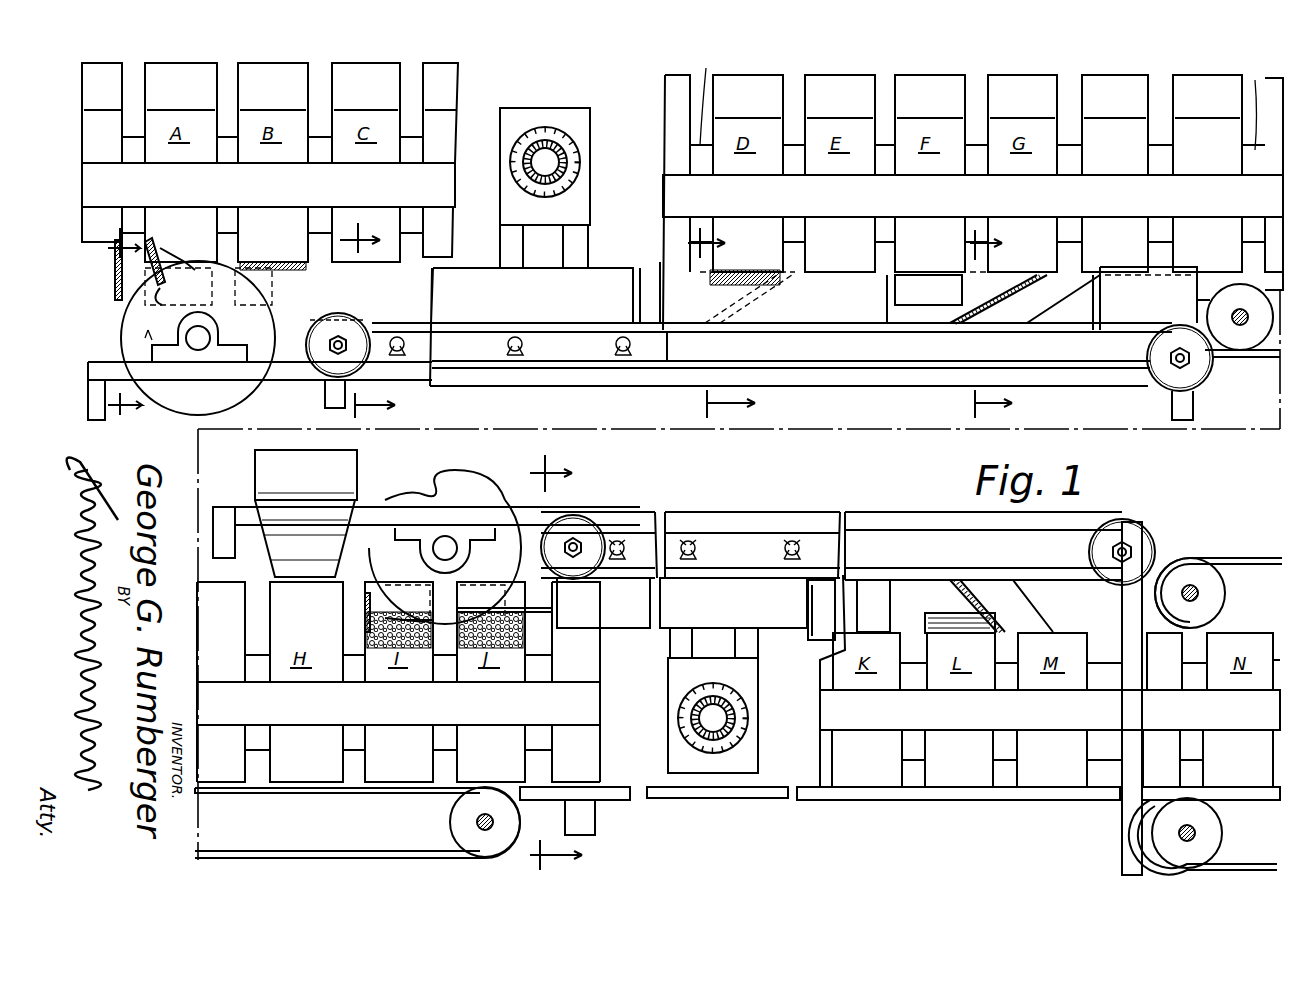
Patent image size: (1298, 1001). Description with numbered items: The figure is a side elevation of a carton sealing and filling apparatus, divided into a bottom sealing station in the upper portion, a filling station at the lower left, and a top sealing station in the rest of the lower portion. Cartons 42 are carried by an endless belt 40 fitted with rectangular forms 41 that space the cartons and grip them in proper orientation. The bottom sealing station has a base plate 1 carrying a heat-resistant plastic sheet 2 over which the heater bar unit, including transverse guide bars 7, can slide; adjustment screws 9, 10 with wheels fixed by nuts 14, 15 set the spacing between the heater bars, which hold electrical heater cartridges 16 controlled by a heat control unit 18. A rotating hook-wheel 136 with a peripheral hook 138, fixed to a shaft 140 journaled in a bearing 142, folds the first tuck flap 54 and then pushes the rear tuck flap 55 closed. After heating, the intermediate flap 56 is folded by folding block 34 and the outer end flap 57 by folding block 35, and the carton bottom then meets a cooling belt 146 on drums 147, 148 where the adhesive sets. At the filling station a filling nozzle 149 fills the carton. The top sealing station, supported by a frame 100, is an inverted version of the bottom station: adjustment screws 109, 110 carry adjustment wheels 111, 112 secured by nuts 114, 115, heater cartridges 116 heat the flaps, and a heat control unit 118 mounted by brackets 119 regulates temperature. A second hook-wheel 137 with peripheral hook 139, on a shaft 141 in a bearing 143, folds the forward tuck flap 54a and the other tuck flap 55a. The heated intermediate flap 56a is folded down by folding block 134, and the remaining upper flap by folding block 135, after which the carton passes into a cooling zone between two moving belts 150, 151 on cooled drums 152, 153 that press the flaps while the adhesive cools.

The base plate 1 is at (480, 376).
The plastic sheet 2 is at (488, 350).
The transverse guide bars 7 is at (480, 323).
The adjustment screw 9 is at (332, 352).
The adjustment screw 10 is at (1175, 365).
The nut 14 is at (345, 338).
The nut 15 is at (1190, 365).
The electrical heater cartridges 16 is at (410, 346).
The heat control unit 18 is at (568, 112).
The folding block 34 is at (753, 320).
The folding block 35 is at (993, 325).
The endless belt 40 is at (1218, 203).
The rectangular forms 41 is at (908, 818).
The cartons 42 is at (282, 231).
The tuck flap 54 is at (187, 255).
The rear tuck flap 55 is at (159, 261).
The intermediate flap 56 is at (718, 275).
The outer end flap 57 is at (940, 301).
The frame 100 is at (234, 497).
The adjustment screw 109 is at (578, 545).
The adjustment screw 110 is at (1125, 545).
The adjustment wheel 111 is at (608, 545).
The adjustment wheel 112 is at (1157, 555).
The nut 114 is at (580, 555).
The nut 115 is at (1098, 575).
The heater cartridges 116 is at (782, 548).
The heat control unit 118 is at (750, 752).
The brackets 119 is at (752, 645).
The folding block 134 is at (876, 585).
The folding block 135 is at (972, 583).
The hook-wheel 136 is at (112, 343).
The hook-wheel 137 is at (385, 500).
The peripheral hook 138 is at (152, 283).
The peripheral hook 139 is at (435, 480).
The shaft 140 is at (198, 350).
The shaft 141 is at (440, 550).
The bearing 142 is at (236, 348).
The bearing 143 is at (462, 595).
The cooling belt 146 is at (1265, 355).
The drum 147 is at (1250, 308).
The drum 148 is at (448, 822).
The filling nozzle 149 is at (312, 553).
The moving belt 150 is at (1245, 800).
The moving belt 151 is at (1230, 556).
The drum 152 is at (1215, 840).
The drum 153 is at (1225, 593).
The forward tuck flap 54a is at (402, 611).
The tuck flap 55a is at (362, 610).
The intermediate flap 56a is at (900, 620).